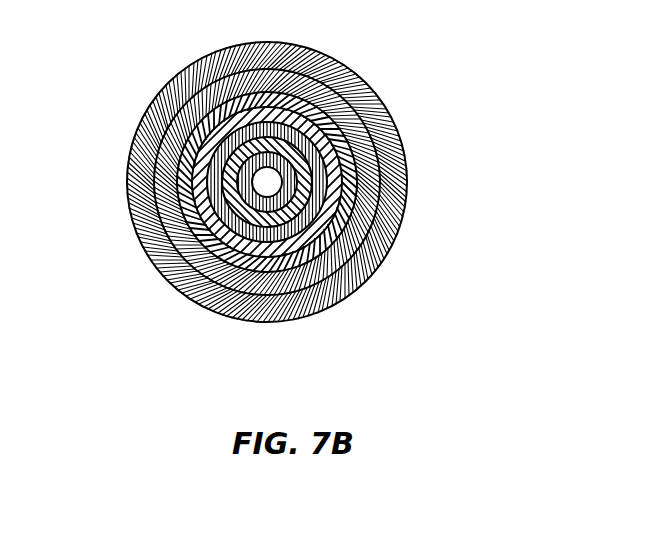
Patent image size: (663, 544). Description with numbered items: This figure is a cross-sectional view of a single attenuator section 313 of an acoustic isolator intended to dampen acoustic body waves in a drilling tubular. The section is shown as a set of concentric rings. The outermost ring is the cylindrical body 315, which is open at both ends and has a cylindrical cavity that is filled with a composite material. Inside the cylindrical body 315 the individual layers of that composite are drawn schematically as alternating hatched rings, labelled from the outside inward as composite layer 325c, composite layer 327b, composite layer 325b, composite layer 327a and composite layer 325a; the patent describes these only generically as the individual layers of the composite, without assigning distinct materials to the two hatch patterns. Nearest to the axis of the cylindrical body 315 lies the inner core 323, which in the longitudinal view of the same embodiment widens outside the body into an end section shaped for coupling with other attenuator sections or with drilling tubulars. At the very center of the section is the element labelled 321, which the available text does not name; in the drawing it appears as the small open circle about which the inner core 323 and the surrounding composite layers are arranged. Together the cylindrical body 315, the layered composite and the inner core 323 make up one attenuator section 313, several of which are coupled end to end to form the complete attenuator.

The attenuator section 313 is at (440, 268).
The cylindrical body 315 is at (220, 54).
The center conductor 321 is at (259, 187).
The inner core 323 is at (257, 207).
The composite layer 325a is at (290, 232).
The composite layer 327a is at (328, 238).
The composite layer 325b is at (295, 113).
The composite layer 327b is at (362, 102).
The composite layer 325c is at (365, 160).